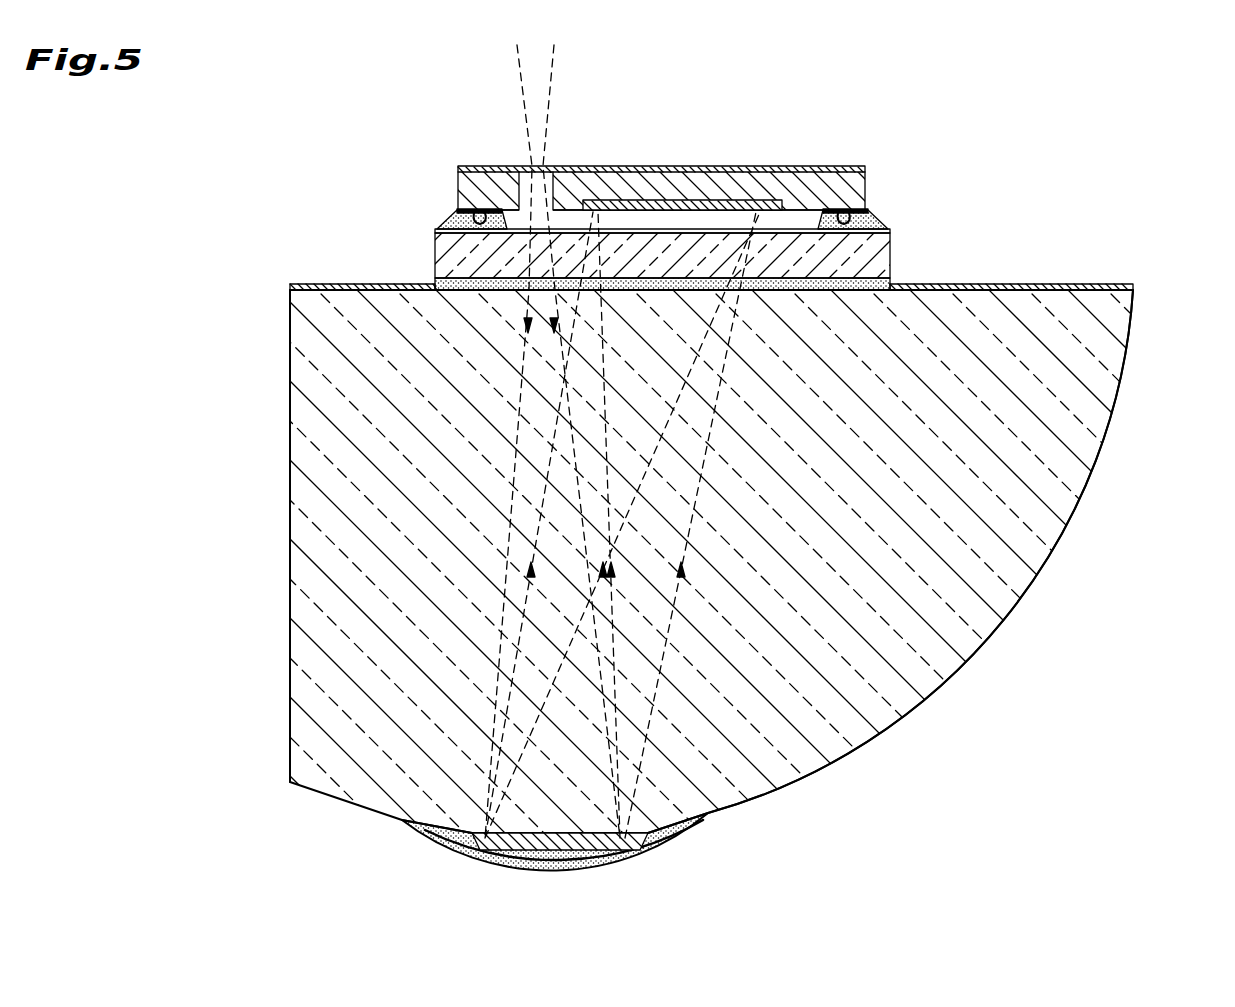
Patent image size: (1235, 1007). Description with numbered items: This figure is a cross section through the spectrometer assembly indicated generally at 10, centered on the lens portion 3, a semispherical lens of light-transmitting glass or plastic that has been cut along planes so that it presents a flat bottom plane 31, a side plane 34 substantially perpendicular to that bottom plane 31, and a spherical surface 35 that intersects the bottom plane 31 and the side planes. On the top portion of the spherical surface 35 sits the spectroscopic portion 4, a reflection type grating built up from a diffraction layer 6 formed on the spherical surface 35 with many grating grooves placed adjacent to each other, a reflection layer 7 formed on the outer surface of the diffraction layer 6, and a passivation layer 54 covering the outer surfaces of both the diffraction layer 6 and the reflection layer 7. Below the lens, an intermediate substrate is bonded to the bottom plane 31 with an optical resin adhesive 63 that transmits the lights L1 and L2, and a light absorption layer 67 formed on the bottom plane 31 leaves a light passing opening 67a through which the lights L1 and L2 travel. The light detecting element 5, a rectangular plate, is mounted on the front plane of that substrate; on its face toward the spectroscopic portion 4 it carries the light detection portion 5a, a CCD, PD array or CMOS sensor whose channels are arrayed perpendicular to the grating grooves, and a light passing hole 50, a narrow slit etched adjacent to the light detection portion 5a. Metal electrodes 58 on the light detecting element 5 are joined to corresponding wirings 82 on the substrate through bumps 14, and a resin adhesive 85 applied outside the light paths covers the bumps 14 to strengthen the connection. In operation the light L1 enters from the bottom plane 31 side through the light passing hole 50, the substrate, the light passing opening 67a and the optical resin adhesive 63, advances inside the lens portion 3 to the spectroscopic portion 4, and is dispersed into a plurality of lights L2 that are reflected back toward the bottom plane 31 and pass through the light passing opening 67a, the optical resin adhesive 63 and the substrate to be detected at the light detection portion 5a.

The optical module 10 is at (980, 124).
The lens portion 3 is at (1045, 520).
The bottom plane 31 is at (1130, 287).
The side plane (second plane) 34 is at (290, 520).
The spherical surface (curved surface) 35 is at (950, 677).
The spectroscopic portion 4 is at (541, 874).
The light detecting element 5 is at (775, 168).
The light detection portion 5a is at (702, 200).
The diffraction layer 6 is at (612, 840).
The reflection layer 7 is at (568, 856).
The bumps 14 is at (478, 212).
The light passing hole 50 is at (528, 170).
The passivation layer 54 is at (440, 836).
The electrodes 58 is at (466, 212).
The optical resin adhesive 63 is at (885, 280).
The light absorption layer 67 is at (292, 283).
The light passing opening 67a is at (440, 283).
The wirings 82 is at (455, 233).
The resin adhesive 85 is at (462, 222).
The light L1 is at (548, 92).
The lights L2 is at (730, 690).